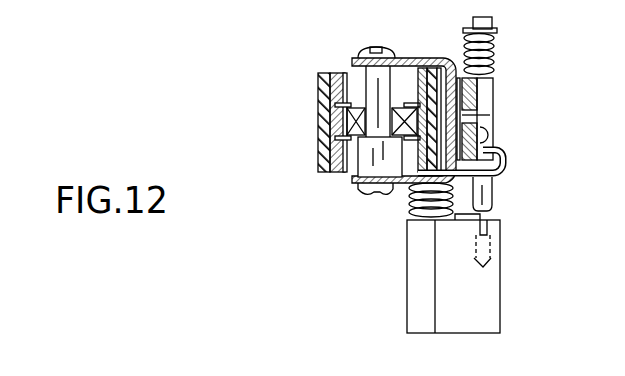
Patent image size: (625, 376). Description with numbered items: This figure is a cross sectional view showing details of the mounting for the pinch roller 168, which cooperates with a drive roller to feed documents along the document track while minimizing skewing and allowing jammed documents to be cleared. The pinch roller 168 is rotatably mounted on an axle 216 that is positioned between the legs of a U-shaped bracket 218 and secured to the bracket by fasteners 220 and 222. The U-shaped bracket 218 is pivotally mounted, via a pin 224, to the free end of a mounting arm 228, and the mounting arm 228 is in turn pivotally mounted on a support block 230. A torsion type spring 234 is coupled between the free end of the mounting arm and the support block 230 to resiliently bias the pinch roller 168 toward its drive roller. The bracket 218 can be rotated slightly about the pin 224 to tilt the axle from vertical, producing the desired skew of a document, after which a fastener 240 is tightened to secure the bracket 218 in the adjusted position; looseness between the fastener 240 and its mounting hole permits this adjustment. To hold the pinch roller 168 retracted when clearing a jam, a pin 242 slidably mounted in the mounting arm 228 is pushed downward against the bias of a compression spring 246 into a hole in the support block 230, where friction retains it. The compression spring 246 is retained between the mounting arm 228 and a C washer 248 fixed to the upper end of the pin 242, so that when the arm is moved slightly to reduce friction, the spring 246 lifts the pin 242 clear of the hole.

The pinch roller 168 is at (325, 118).
The axle 216 is at (352, 75).
The U-shaped bracket 218 is at (427, 57).
The fastener 220 is at (372, 87).
The fastener 222 is at (372, 187).
The pin 224 is at (478, 113).
The mounting arm 228 is at (487, 91).
The support block 230 is at (480, 293).
The torsion spring 234 is at (412, 202).
The fastener 240 is at (495, 128).
The pin 242 is at (483, 187).
The compression spring 246 is at (498, 56).
The C washer 248 is at (495, 32).